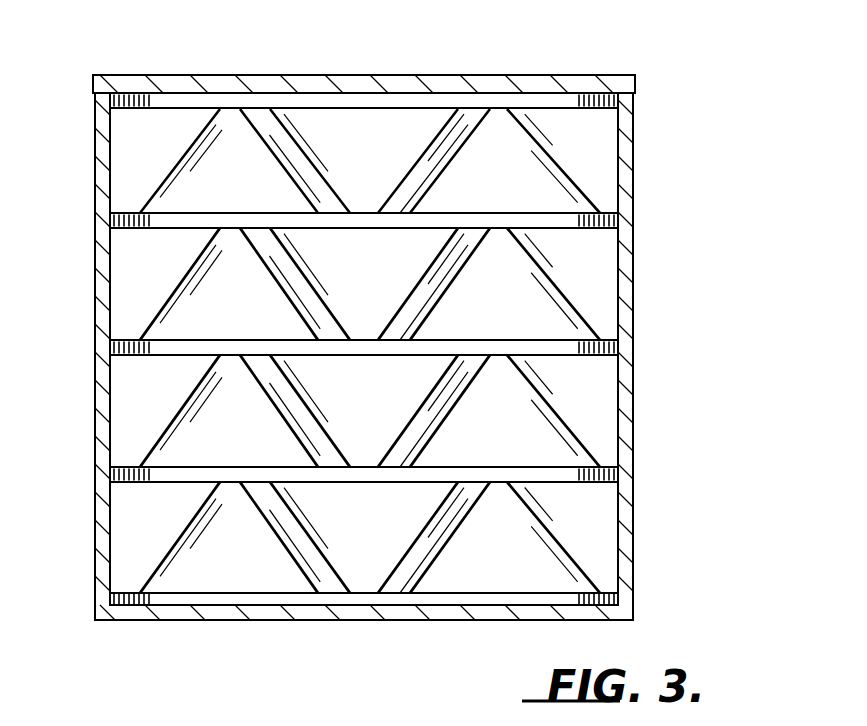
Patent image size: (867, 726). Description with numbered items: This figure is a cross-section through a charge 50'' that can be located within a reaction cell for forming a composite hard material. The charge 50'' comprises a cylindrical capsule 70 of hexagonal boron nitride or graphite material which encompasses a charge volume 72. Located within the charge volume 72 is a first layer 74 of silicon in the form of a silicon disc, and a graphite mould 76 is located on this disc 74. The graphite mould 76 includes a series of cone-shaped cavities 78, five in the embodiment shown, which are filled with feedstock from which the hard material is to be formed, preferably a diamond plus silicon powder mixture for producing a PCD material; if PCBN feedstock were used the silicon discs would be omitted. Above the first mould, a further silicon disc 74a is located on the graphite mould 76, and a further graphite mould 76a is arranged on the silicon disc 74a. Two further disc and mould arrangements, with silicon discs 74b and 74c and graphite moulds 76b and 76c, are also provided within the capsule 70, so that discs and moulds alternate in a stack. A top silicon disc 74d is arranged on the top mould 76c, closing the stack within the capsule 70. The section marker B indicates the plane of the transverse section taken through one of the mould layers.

The charge 50'' is at (381, 348).
The cylindrical capsule 70 is at (108, 618).
The charge volume 72 is at (539, 112).
The first layer of silicon 74 is at (197, 596).
The further silicon disc 74a is at (158, 484).
The silicon disc 74b is at (155, 357).
The silicon disc 74c is at (153, 230).
The top silicon disc 74d is at (168, 110).
The graphite mould 76 is at (432, 585).
The further graphite mould 76a is at (590, 405).
The graphite mould 76b is at (580, 270).
The top graphite mould 76c is at (567, 153).
The cone-shaped cavities 78 is at (457, 563).
The section line B is at (97, 482).